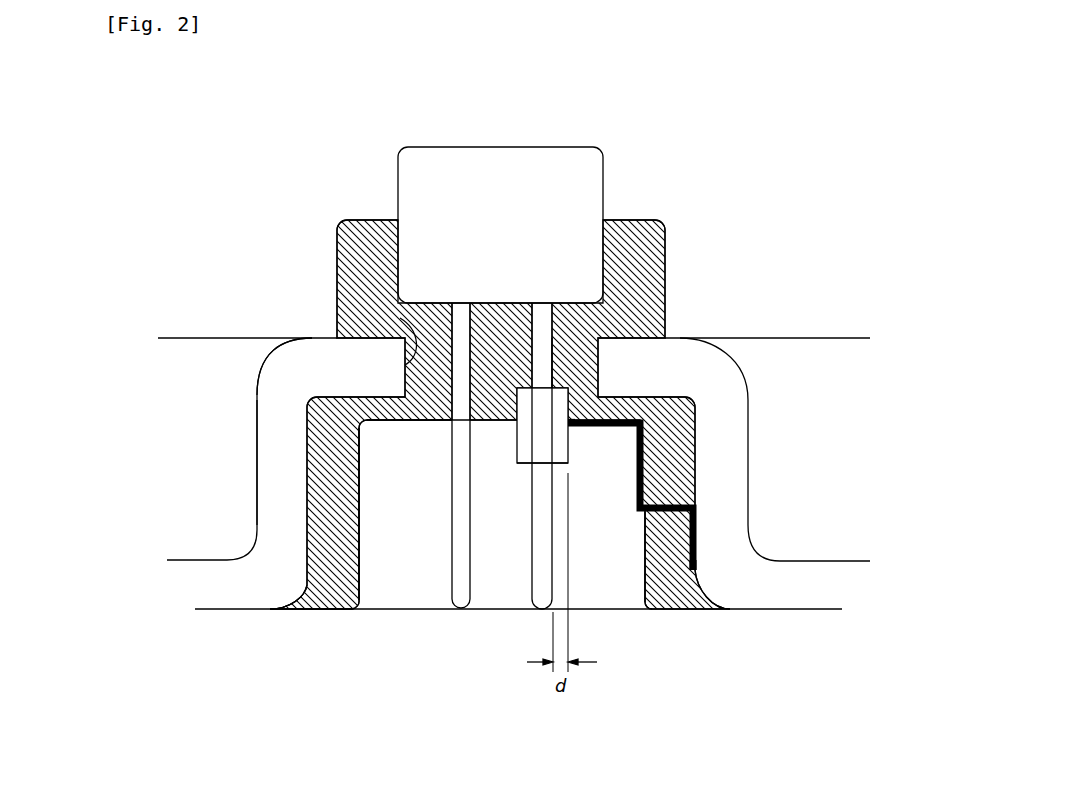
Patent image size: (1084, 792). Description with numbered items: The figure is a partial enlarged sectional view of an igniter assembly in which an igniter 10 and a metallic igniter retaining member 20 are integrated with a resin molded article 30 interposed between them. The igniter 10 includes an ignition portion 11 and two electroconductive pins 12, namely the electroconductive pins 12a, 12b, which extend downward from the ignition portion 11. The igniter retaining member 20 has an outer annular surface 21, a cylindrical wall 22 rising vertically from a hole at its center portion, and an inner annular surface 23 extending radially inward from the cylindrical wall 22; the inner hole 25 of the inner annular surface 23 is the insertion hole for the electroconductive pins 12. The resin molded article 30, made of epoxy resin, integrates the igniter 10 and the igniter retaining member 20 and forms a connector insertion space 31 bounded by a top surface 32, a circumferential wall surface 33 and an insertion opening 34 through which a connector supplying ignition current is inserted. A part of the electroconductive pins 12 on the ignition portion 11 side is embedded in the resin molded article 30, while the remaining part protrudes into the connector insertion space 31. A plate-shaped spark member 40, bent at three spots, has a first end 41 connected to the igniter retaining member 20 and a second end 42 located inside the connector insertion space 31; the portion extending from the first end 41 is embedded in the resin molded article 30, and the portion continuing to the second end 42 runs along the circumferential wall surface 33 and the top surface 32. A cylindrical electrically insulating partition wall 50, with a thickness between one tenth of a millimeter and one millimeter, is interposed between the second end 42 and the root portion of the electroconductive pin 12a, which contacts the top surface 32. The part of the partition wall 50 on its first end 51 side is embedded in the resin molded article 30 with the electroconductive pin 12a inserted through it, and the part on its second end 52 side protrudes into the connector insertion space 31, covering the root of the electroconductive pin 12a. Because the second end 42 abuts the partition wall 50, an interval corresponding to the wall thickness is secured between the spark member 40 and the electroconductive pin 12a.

The igniter 10 is at (500, 395).
The ignition portion 11 is at (514, 235).
The electroconductive pins 12 is at (491, 517).
The electroconductive pin 12a is at (543, 610).
The electroconductive pin 12b is at (461, 610).
The igniter retaining member 20 is at (518, 475).
The outer annular surface 21 is at (222, 612).
The cylindrical wall 22 is at (257, 475).
The inner annular surface 23 is at (323, 348).
The inner hole 25 is at (400, 318).
The resin molded article 30 is at (510, 442).
The connector insertion space 31 is at (429, 593).
The top surface 32 is at (413, 422).
The circumferential wall surface 33 is at (361, 494).
The insertion opening 34 is at (390, 612).
The spark member 40 is at (661, 537).
The first end 41 is at (693, 573).
The second end 42 is at (572, 424).
The cylindrical electrically insulating partition wall 50 is at (522, 453).
The first end 51 is at (557, 385).
The second end 52 is at (525, 464).